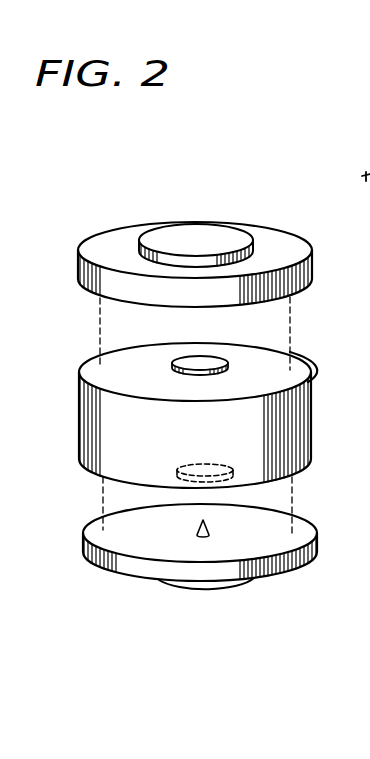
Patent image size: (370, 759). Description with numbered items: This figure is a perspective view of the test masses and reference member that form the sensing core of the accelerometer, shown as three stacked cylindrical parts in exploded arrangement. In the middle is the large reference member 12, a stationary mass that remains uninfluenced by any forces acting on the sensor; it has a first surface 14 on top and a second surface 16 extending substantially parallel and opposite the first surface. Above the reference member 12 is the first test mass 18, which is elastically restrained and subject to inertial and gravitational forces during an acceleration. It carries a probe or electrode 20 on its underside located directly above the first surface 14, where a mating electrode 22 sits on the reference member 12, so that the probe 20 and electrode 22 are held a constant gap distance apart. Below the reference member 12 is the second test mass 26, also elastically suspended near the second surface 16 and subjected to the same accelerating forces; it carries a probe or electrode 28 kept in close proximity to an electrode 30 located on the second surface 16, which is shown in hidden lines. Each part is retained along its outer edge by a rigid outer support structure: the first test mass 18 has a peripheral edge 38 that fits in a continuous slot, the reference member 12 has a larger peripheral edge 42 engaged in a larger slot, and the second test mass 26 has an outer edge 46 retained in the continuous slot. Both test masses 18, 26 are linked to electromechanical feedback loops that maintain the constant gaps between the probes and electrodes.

The reference member 12 is at (191, 395).
The first surface 14 is at (265, 368).
The second surface 16 is at (310, 463).
The first test mass 18 is at (207, 250).
The probe or electrode 20 is at (200, 304).
The electrode 22 is at (182, 357).
The second test mass 26 is at (185, 557).
The probe or electrode 28 is at (198, 530).
The electrode 30 is at (177, 467).
The peripheral edge 38 is at (263, 236).
The peripheral edge 42 is at (300, 368).
The outer edge 46 is at (85, 540).